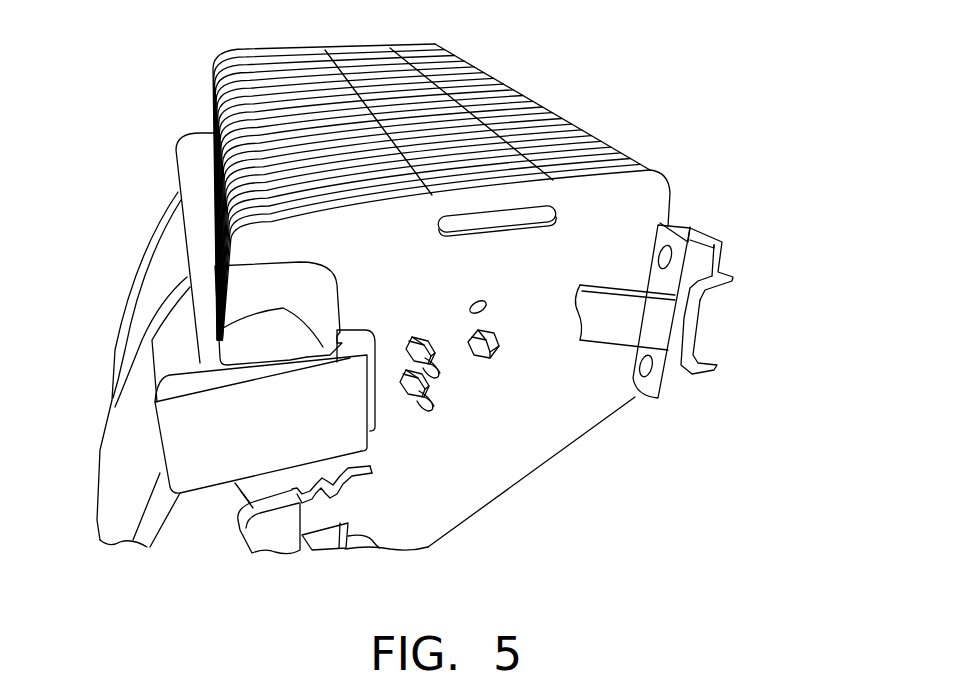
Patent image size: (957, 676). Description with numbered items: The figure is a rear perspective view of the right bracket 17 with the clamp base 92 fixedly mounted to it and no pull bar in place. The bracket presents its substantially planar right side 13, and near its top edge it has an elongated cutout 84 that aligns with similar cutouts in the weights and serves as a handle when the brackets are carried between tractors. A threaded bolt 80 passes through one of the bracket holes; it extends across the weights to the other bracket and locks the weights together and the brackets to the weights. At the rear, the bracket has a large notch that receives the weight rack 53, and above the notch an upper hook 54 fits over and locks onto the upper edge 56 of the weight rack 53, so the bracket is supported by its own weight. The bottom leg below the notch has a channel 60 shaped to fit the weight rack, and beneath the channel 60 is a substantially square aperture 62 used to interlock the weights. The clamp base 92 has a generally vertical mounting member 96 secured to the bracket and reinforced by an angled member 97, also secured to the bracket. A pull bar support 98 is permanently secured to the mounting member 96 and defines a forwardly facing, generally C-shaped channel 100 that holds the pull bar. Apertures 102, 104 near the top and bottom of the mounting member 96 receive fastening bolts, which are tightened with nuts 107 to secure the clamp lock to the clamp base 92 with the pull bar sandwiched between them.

The right side 13 is at (555, 437).
The right bracket 17 is at (391, 263).
The weight rack 53 is at (227, 443).
The upper hook 54 is at (250, 312).
The upper edge 56 is at (216, 266).
The channel 60 is at (318, 506).
The square aperture 62 is at (384, 548).
The bolt 80 is at (483, 358).
The elongated cutout 84 is at (555, 214).
The clamp base 92 is at (679, 412).
The mounting member 96 is at (685, 383).
The angled member 97 is at (583, 292).
The pull bar support 98 is at (720, 365).
The channel 100 is at (728, 307).
The aperture 102 is at (673, 225).
The aperture 104 is at (637, 395).
The nuts 107 is at (423, 334).